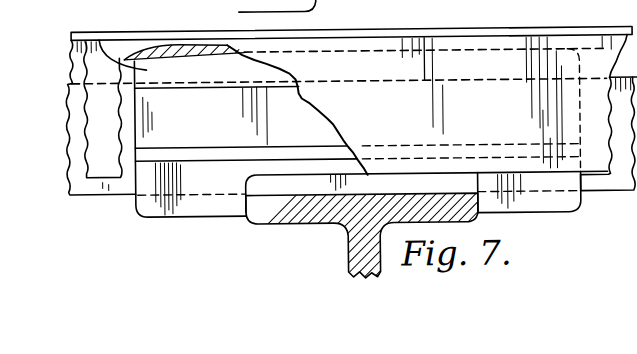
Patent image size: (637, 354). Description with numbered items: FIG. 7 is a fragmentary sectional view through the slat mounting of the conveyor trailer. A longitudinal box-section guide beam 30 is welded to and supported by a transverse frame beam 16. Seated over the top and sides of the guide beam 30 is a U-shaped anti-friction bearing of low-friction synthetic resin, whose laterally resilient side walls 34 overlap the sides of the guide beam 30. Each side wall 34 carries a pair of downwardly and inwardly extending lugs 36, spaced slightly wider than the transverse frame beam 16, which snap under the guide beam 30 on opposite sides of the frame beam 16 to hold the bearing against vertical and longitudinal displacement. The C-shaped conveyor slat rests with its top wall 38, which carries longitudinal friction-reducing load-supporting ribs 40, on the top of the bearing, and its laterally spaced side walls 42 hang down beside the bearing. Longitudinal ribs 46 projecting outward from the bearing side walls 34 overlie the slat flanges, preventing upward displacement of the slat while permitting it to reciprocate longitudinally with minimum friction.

The transverse frame beam 16 is at (347, 240).
The guide beam 30 is at (604, 193).
The side wall 34 is at (100, 38).
The lug 36 is at (192, 207).
The top wall 38 is at (175, 43).
The longitudinal friction-reducing load-supporting rib 40 is at (447, 30).
The side wall 42 is at (506, 64).
The longitudinal rib 46 is at (325, 134).